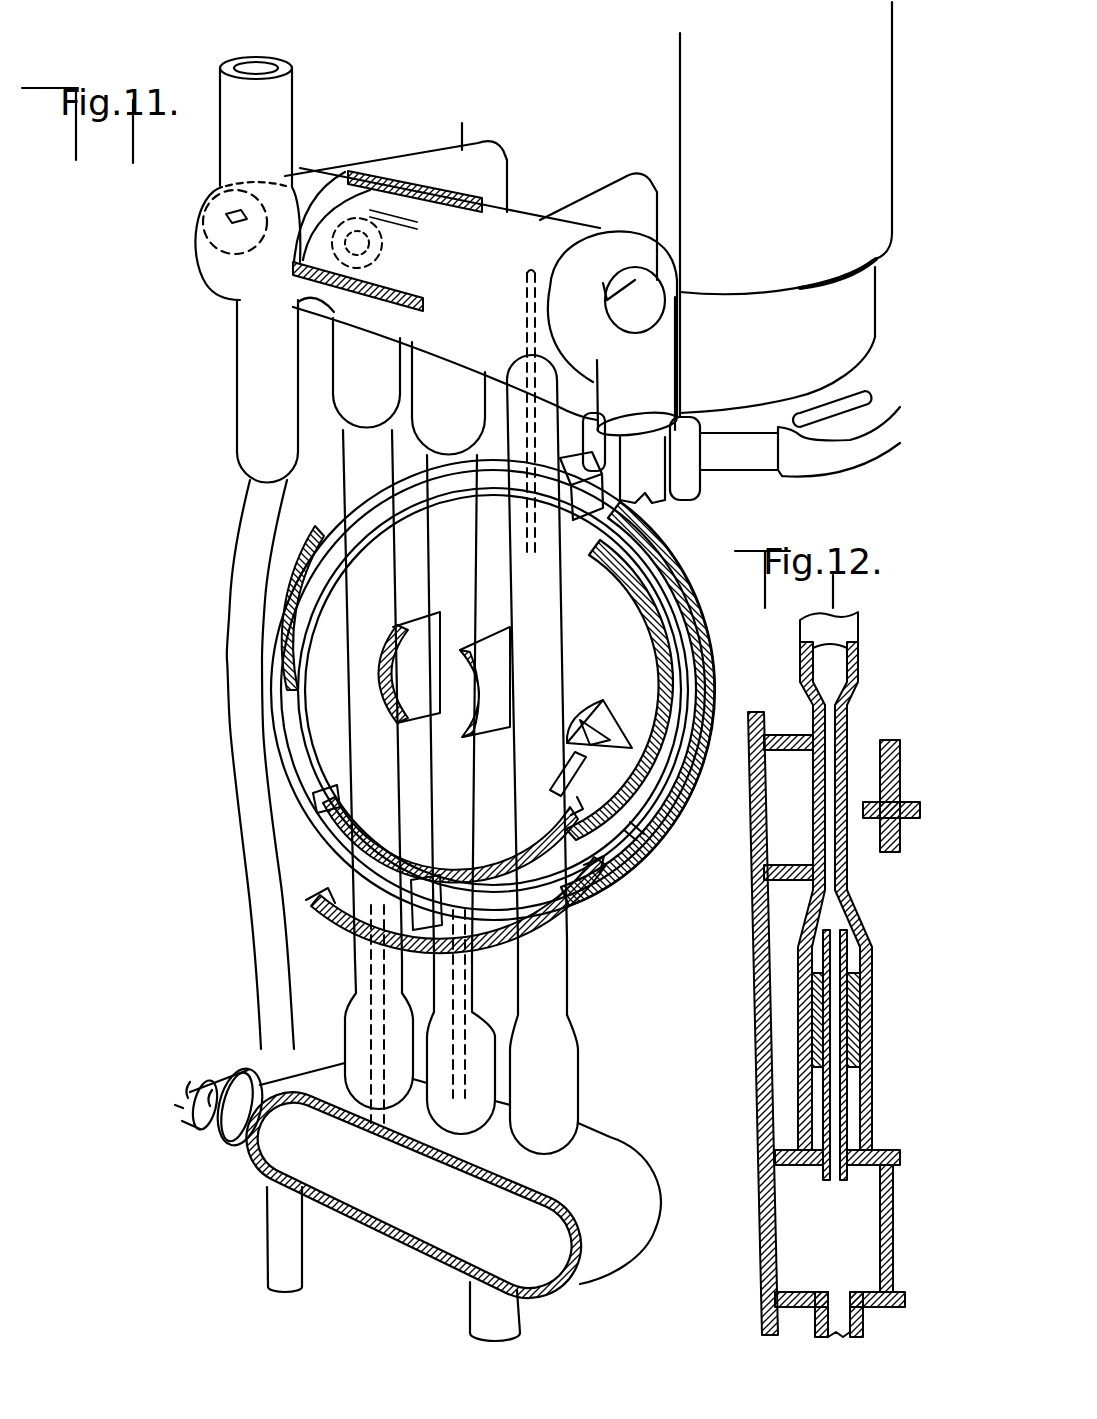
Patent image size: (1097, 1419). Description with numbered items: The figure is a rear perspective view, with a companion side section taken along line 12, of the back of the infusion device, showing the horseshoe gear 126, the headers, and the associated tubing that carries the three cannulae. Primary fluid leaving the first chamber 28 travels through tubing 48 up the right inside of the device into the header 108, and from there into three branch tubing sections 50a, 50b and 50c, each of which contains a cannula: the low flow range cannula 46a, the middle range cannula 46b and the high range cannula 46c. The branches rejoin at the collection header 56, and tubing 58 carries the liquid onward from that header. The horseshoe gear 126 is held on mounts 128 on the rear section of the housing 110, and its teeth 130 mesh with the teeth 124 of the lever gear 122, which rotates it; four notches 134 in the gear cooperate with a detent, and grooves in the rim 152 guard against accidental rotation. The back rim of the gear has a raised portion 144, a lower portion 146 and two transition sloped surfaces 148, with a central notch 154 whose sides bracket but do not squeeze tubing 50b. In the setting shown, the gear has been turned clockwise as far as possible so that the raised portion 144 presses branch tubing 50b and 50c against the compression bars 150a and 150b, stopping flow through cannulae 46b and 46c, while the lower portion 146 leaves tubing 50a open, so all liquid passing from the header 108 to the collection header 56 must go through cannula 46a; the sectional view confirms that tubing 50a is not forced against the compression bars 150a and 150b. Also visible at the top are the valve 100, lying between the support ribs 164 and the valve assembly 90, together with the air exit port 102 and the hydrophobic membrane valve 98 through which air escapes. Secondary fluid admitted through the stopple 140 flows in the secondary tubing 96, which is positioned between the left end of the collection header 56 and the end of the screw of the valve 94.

In FIG. 11, the section line 12 is at (368, 773).
In FIG. 11, the first chamber 28 is at (800, 159).
In FIG. 11, the low flow range cannula 46a is at (371, 986).
In FIG. 12, the low flow range cannula 46a is at (845, 960).
In FIG. 11, the middle range cannula 46b is at (456, 992).
In FIG. 11, the high range cannula 46c is at (516, 289).
In FIG. 11, the tubing 48 is at (657, 501).
In FIG. 11, the branch tubing section 50a is at (387, 593).
In FIG. 12, the branch tubing section 50a is at (858, 690).
In FIG. 11, the branch tubing section 50b is at (472, 593).
In FIG. 11, the branch tubing section 50c is at (551, 593).
In FIG. 11, the collection header 56 is at (618, 1191).
In FIG. 12, the collection header 56 is at (893, 1201).
In FIG. 11, the tubing 58 is at (481, 1303).
In FIG. 12, the tubing 58 is at (864, 1327).
In FIG. 11, the valve assembly 90 is at (213, 276).
In FIG. 11, the valve 94 is at (204, 1070).
In FIG. 11, the secondary tubing 96 is at (258, 916).
In FIG. 11, the hydrophobic membrane valve 98 is at (213, 243).
In FIG. 11, the valve 100 is at (383, 265).
In FIG. 11, the air exit port 102 is at (258, 212).
In FIG. 11, the header 108 is at (520, 217).
In FIG. 12, the housing 110 is at (756, 935).
In FIG. 11, the lever gear 122 is at (810, 467).
In FIG. 11, the teeth 124 is at (607, 434).
In FIG. 11, the horseshoe gear 126 is at (653, 833).
In FIG. 12, the horseshoe gear 126 is at (900, 772).
In FIG. 11, the mounts 128 is at (495, 725).
In FIG. 11, the teeth 130 is at (607, 468).
In FIG. 11, the notches 134 is at (418, 440).
In FIG. 11, the stopple 140 is at (268, 66).
In FIG. 11, the back rim raised portion 144 is at (606, 700).
In FIG. 11, the back rim lower portion 146 is at (328, 518).
In FIG. 12, the back rim lower portion 146 is at (870, 823).
In FIG. 11, the transition sloped surfaces 148 is at (567, 553).
In FIG. 11, the compression bar 150a is at (420, 848).
In FIG. 12, the compression bar 150a is at (787, 733).
In FIG. 11, the compression bar 150b is at (351, 888).
In FIG. 12, the compression bar 150b is at (770, 864).
In FIG. 11, the rim 152 is at (652, 620).
In FIG. 11, the notch 154 is at (627, 746).
In FIG. 11, the support ribs 164 is at (408, 198).